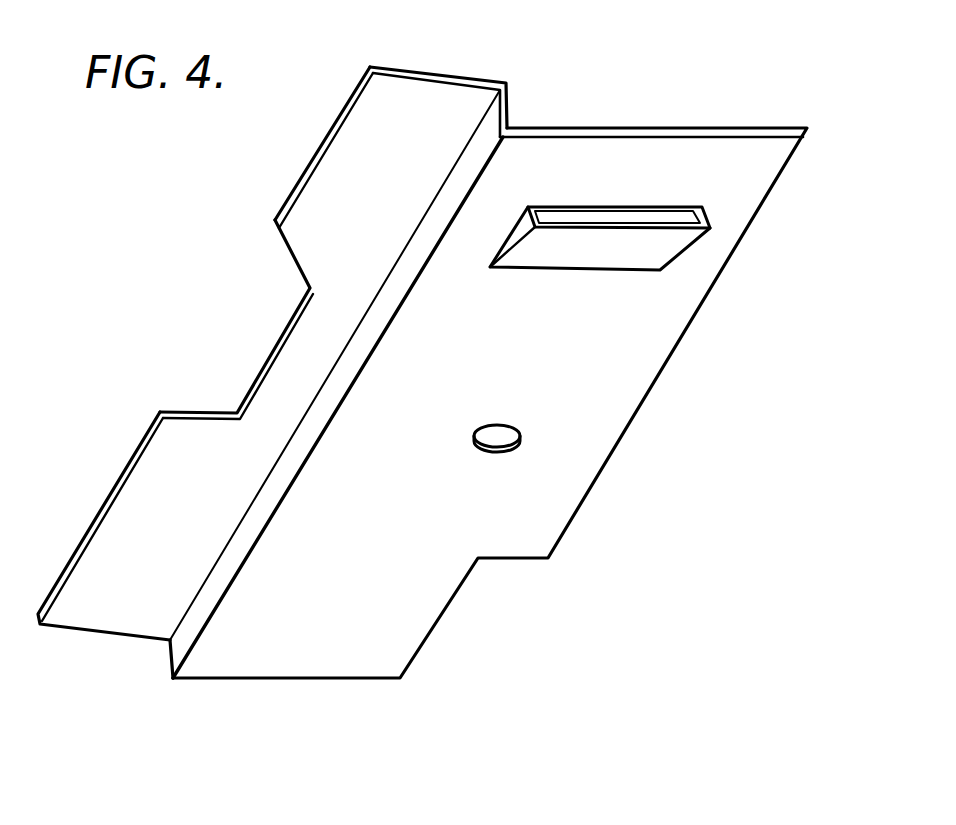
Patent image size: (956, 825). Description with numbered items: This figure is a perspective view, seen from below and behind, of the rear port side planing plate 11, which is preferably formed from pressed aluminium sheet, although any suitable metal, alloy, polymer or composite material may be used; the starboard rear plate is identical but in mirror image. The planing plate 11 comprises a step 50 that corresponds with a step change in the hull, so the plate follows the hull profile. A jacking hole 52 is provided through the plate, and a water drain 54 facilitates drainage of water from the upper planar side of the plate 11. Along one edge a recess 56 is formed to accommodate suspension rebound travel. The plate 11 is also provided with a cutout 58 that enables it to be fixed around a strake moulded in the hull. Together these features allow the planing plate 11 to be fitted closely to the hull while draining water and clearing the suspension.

The rear port side planing plate 11 is at (703, 102).
The step 50 is at (187, 625).
The jacking hole 52 is at (512, 446).
The water drain 54 is at (675, 245).
The recess 56 is at (278, 327).
The cutout 58 is at (487, 620).